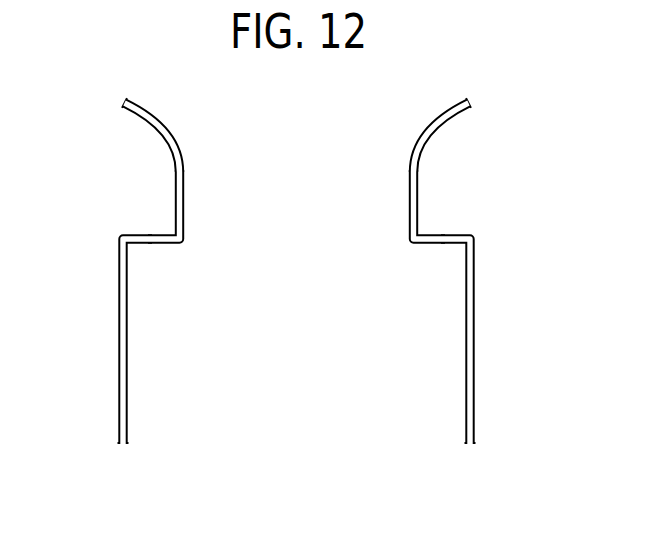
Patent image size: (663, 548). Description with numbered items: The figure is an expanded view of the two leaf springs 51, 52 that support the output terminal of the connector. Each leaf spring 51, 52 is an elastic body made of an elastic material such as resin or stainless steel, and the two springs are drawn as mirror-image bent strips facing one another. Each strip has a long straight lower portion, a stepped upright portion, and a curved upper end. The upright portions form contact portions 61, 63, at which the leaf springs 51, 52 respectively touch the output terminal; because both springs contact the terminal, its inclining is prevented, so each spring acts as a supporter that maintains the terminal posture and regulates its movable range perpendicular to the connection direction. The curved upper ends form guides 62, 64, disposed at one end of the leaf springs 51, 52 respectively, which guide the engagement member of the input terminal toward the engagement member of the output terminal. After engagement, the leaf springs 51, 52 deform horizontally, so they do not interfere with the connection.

The leaf spring 51 is at (486, 280).
The leaf spring 52 is at (104, 280).
The contact portion 61 is at (431, 197).
The guide 62 is at (456, 132).
The contact portion 63 is at (163, 199).
The guide 64 is at (136, 133).